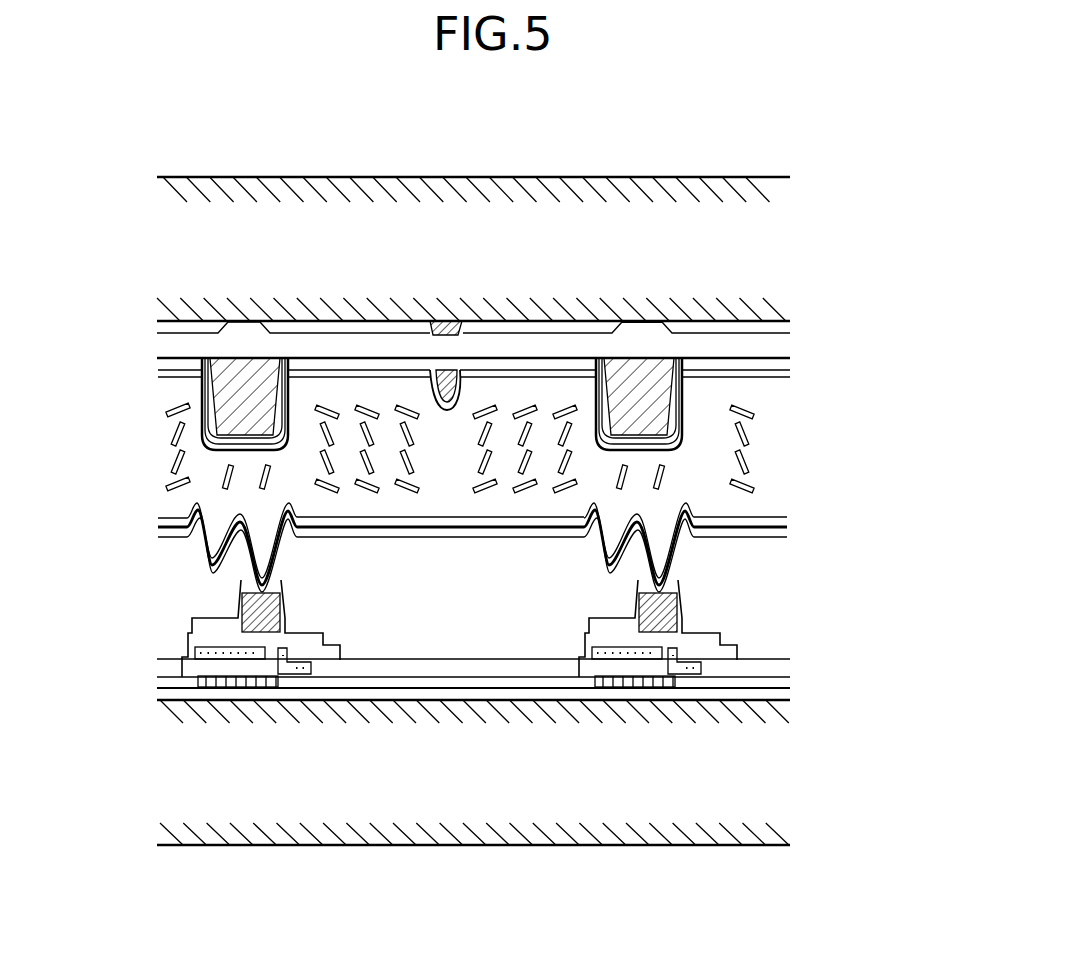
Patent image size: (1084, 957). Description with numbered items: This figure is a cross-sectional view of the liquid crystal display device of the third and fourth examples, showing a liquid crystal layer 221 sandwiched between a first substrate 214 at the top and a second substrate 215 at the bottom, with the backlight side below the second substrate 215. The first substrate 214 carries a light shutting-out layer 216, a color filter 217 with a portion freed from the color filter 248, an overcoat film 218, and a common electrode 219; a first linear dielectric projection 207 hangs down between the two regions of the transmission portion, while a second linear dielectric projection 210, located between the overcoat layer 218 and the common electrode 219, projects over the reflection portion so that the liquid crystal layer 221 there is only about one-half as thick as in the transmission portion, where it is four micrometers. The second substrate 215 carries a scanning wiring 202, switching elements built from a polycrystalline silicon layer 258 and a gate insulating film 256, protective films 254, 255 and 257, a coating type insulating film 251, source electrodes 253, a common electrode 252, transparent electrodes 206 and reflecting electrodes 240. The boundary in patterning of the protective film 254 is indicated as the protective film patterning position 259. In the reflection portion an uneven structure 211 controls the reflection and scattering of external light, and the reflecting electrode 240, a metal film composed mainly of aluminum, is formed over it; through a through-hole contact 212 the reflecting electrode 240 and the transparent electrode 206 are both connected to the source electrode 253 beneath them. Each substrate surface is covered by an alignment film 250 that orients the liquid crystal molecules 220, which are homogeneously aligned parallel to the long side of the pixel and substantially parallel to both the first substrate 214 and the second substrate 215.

The first substrate 214 is at (725, 250).
The common electrode 219 is at (158, 362).
The light shutting-out layer 216 is at (447, 320).
The color filter 217 is at (566, 332).
The portion freed from the color filter 248 is at (645, 320).
The overcoat film 218 is at (773, 347).
The alignment film 250 is at (158, 368).
The second linear dielectric projection 210 is at (683, 380).
The first linear dielectric projection 207 is at (445, 395).
The liquid crystal molecules 220 is at (173, 433).
The liquid crystal layer 221 is at (773, 465).
The uneven structure 211 is at (190, 502).
The transparent electrode 206 is at (778, 530).
The reflecting electrode 240 is at (160, 535).
The source electrode 253 is at (690, 590).
The protective film 254 is at (718, 635).
The protective film 255 is at (770, 670).
The gate insulating film 256 is at (775, 687).
The protective film 257 is at (777, 697).
The second substrate 215 is at (695, 795).
The common electrode 252 is at (188, 657).
The polycrystalline silicon layer 258 is at (183, 678).
The through-hole contact 212 is at (253, 640).
The protective film patterning position 259 is at (341, 660).
The coating type insulating film 251 is at (465, 598).
The scanning wiring 202 is at (690, 665).